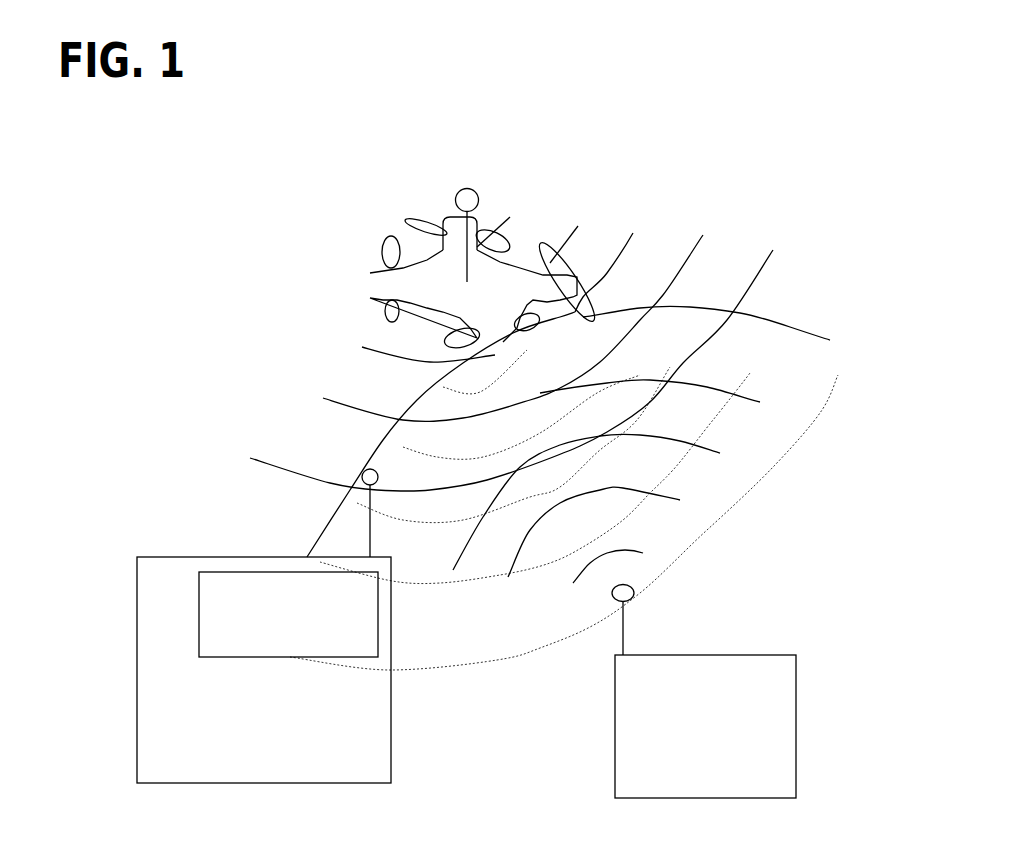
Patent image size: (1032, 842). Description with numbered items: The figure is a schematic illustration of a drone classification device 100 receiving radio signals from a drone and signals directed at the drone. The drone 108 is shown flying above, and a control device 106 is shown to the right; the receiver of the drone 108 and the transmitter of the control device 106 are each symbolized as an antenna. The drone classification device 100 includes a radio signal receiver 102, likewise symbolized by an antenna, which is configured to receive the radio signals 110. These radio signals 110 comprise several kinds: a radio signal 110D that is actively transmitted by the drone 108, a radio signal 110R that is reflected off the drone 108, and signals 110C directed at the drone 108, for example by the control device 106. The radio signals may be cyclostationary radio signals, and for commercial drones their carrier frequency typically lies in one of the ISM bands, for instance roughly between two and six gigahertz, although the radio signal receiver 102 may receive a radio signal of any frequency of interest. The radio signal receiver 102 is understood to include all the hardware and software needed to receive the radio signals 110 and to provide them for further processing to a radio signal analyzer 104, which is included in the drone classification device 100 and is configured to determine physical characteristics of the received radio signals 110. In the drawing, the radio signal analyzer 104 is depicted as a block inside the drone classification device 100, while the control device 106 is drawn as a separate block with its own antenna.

The drone classification device 100 is at (122, 600).
The radio signal receiver 102 is at (370, 543).
The radio signal analyzer 104 is at (378, 610).
The control device 106 is at (722, 786).
The drone 108 is at (350, 290).
The radio signals 110 is at (683, 143).
The radio signal actively transmitted by the drone 110D is at (617, 263).
The signals directed at the drone 110C is at (783, 325).
The radio signal reflected off the drone 110R is at (810, 437).